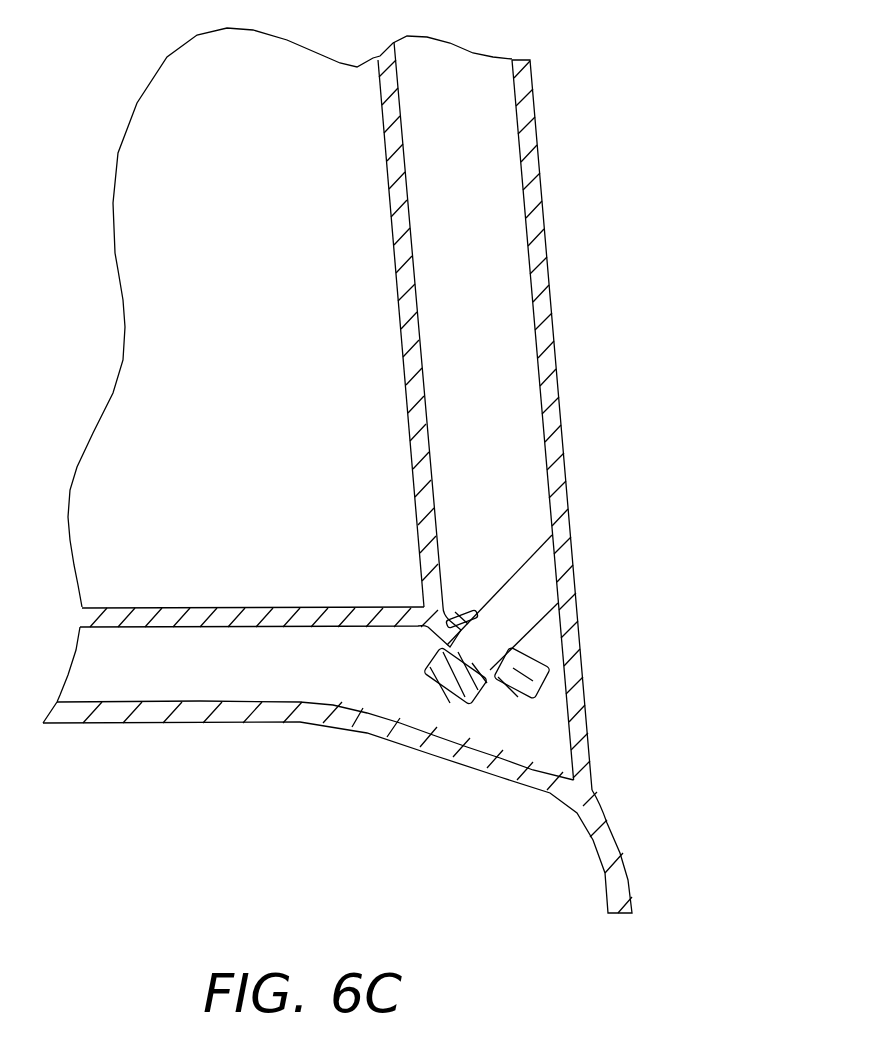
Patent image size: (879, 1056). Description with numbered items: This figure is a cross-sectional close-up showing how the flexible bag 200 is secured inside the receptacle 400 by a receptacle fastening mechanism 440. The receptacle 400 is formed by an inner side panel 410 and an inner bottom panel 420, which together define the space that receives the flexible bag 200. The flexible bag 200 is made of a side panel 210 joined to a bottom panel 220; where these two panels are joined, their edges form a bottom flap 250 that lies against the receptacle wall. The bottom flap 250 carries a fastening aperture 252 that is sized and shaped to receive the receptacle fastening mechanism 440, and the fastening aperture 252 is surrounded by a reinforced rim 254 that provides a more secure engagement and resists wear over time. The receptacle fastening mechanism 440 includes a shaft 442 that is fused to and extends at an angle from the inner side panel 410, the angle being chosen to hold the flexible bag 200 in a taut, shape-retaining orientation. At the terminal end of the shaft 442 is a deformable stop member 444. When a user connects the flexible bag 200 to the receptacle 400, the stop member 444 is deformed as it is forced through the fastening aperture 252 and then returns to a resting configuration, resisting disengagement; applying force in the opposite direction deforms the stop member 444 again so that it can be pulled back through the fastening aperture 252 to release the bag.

The flexible bag 200 is at (285, 338).
The side panel 210 is at (397, 195).
The bottom panel 220 is at (235, 607).
The bottom flap 250 is at (550, 602).
The fastening aperture 252 is at (460, 635).
The reinforced rim 254 is at (463, 612).
The receptacle 400 is at (359, 484).
The inner side panel 410 is at (528, 115).
The inner bottom panel 420 is at (608, 835).
The receptacle fastening mechanism 440 is at (484, 613).
The shaft 442 is at (537, 607).
The stop member 444 is at (418, 658).